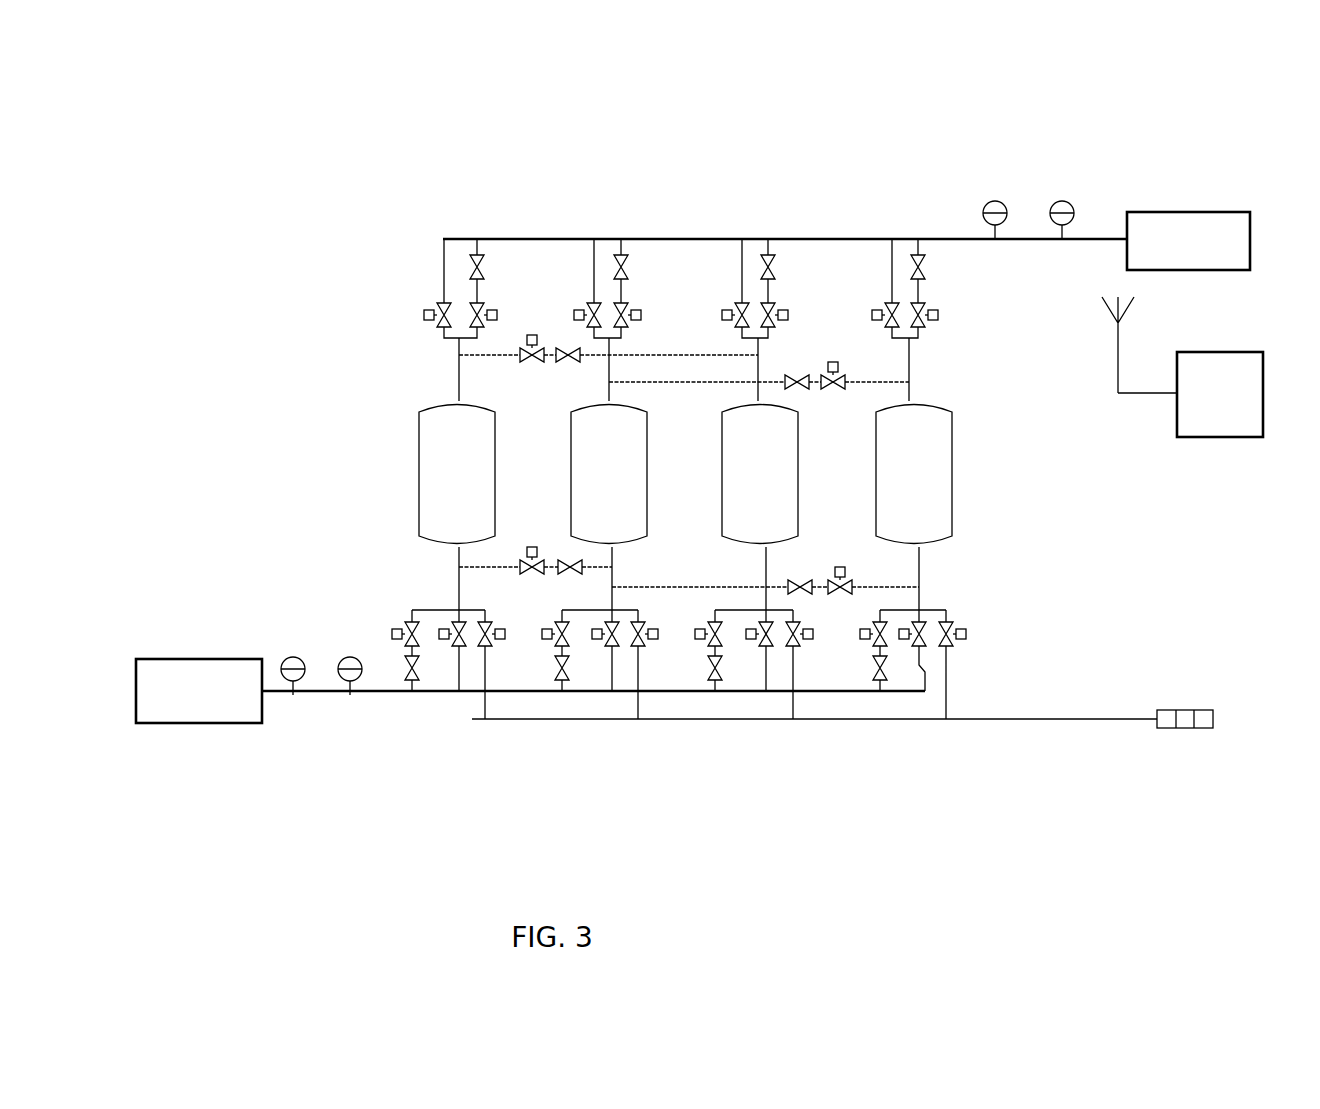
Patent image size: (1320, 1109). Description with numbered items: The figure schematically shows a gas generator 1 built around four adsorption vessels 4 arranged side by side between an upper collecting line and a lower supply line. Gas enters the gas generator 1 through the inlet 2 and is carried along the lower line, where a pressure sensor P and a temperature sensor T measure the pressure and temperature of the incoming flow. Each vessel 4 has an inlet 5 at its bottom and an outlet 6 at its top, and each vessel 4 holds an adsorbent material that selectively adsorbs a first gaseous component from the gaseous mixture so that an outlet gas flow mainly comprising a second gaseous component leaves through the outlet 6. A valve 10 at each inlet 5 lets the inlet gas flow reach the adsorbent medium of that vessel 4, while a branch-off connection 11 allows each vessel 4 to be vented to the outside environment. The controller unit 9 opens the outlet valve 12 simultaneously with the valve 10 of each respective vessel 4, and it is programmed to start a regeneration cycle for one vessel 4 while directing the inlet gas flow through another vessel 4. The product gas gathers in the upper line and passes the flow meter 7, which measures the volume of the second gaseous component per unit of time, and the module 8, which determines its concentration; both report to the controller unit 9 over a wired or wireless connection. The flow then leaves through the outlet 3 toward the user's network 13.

The gas generator 1 is at (398, 328).
The inlet 2 is at (273, 684).
The outlet 3 is at (1093, 247).
The vessel 4 is at (472, 519).
The inlet 5 is at (450, 557).
The outlet 6 is at (752, 391).
The flow meter 7 is at (1048, 193).
The module 8 is at (975, 201).
The controller unit 9 is at (1202, 441).
The valve 10 is at (916, 652).
The branch-off connection 11 is at (492, 650).
The outlet valve 12 is at (199, 730).
The user's network 13 is at (1196, 209).
The pressure sensor P is at (302, 686).
The temperature sensor T is at (364, 681).